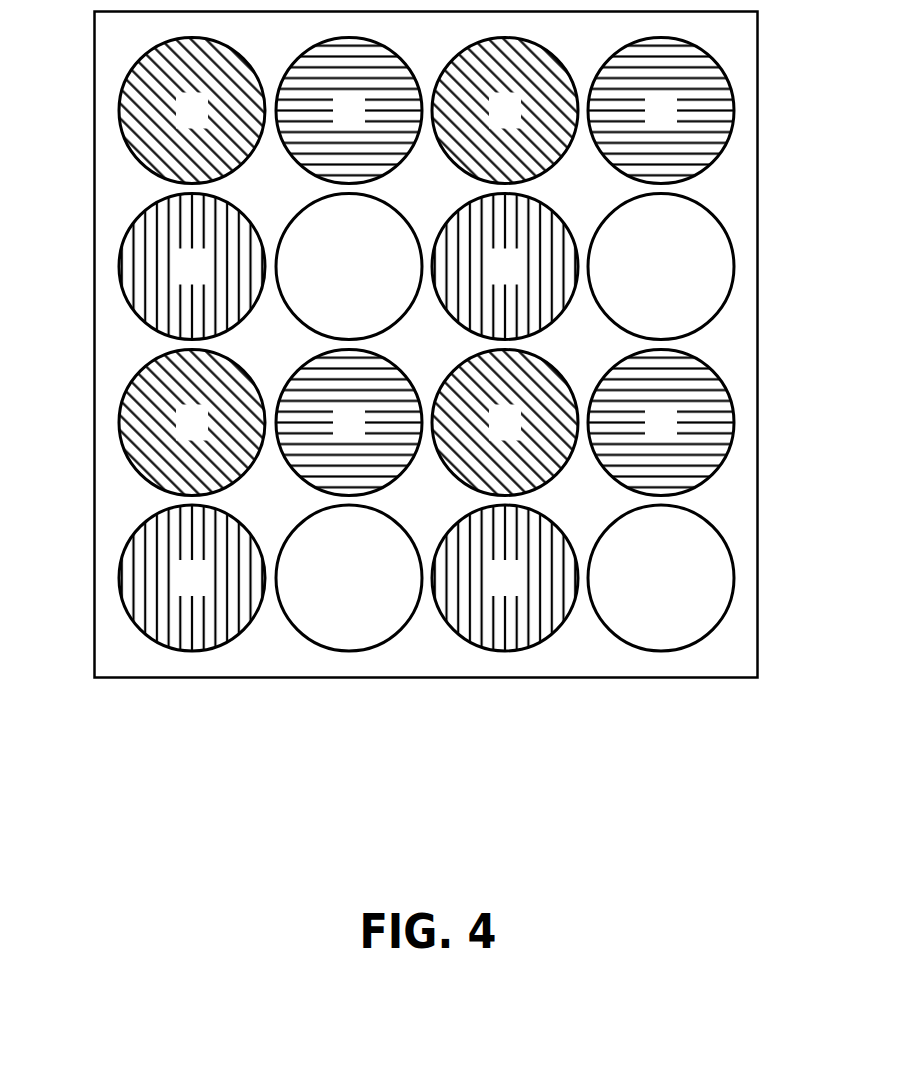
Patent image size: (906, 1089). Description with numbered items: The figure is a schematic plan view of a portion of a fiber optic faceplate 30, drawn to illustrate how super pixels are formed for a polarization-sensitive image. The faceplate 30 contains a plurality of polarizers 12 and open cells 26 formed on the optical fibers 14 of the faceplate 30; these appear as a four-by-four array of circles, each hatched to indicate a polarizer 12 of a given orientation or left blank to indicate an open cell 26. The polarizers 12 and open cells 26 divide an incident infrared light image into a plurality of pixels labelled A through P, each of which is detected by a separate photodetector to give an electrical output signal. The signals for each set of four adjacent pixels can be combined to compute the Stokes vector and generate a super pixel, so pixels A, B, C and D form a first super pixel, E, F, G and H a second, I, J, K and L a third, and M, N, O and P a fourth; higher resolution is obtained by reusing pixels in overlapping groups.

The polarizer 12 is at (127, 593).
The optical fiber 14 is at (367, 628).
The open cell 26 is at (342, 650).
The fiber optic faceplate 30 is at (398, 408).